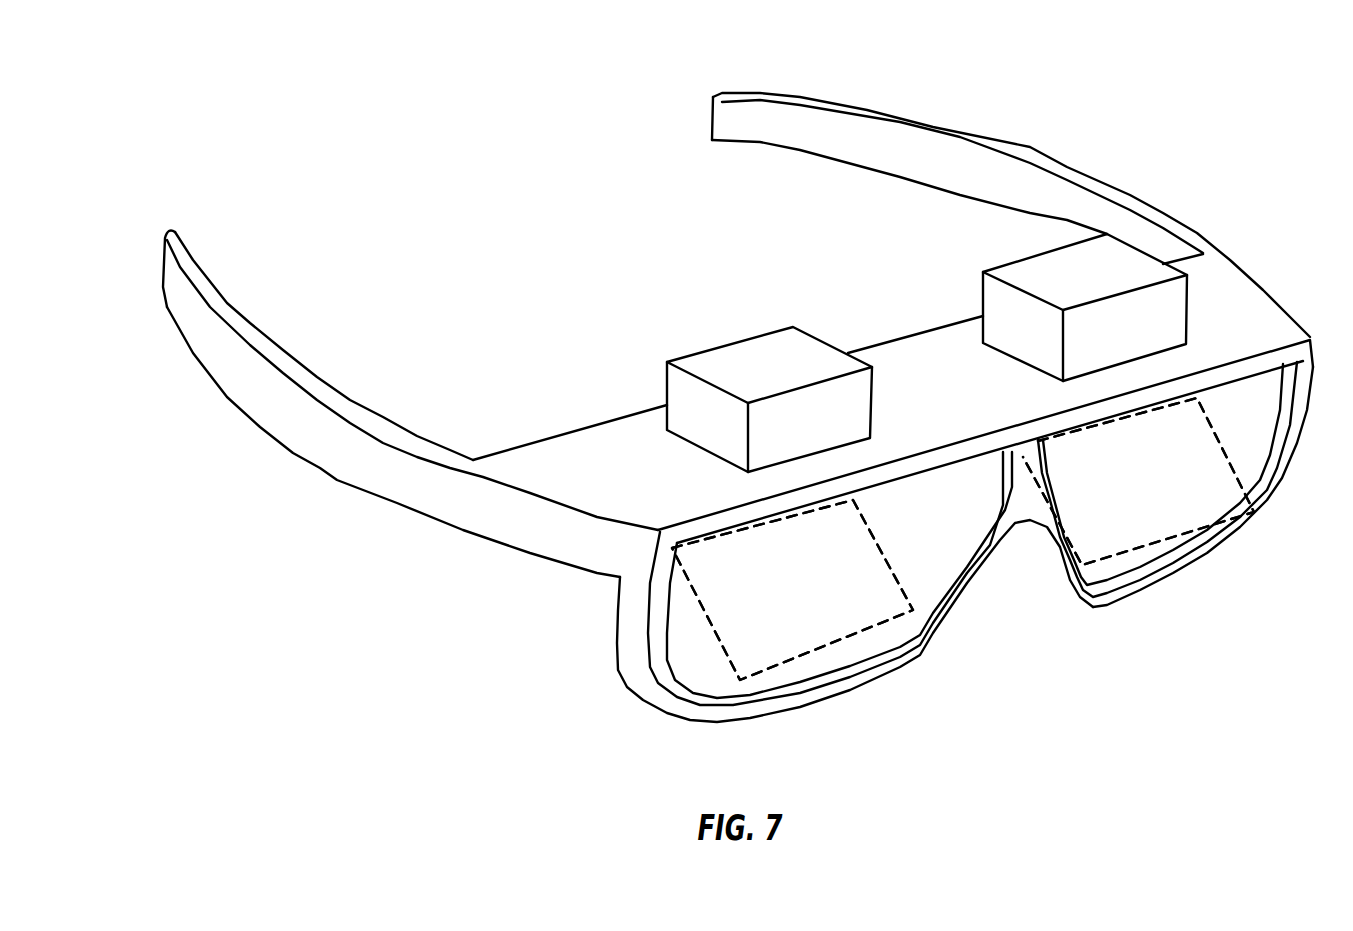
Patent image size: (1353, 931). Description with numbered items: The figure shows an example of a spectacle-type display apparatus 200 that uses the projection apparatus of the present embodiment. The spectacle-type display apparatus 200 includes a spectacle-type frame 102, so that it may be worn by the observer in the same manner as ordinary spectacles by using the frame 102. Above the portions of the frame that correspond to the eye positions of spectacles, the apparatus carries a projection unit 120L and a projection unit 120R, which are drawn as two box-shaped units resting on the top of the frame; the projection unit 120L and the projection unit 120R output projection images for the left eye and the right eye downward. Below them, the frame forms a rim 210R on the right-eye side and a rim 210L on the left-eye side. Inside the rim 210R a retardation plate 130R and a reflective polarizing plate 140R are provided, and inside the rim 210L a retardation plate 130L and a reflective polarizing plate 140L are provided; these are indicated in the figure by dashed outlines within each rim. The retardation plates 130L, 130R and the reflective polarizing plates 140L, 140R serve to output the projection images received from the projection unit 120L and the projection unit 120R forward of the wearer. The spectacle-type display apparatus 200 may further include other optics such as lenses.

The spectacle-type frame 102 is at (883, 115).
The projection unit 120R is at (743, 357).
The projection unit 120L is at (998, 302).
The retardation plate 130R is at (762, 665).
The reflective polarizing plate 140R is at (792, 590).
The retardation plate 130L is at (1136, 550).
The reflective polarizing plate 140L is at (1138, 481).
The rim 210R is at (620, 577).
The rim 210L is at (1210, 380).
The spectacle-type display apparatus 200 is at (936, 841).